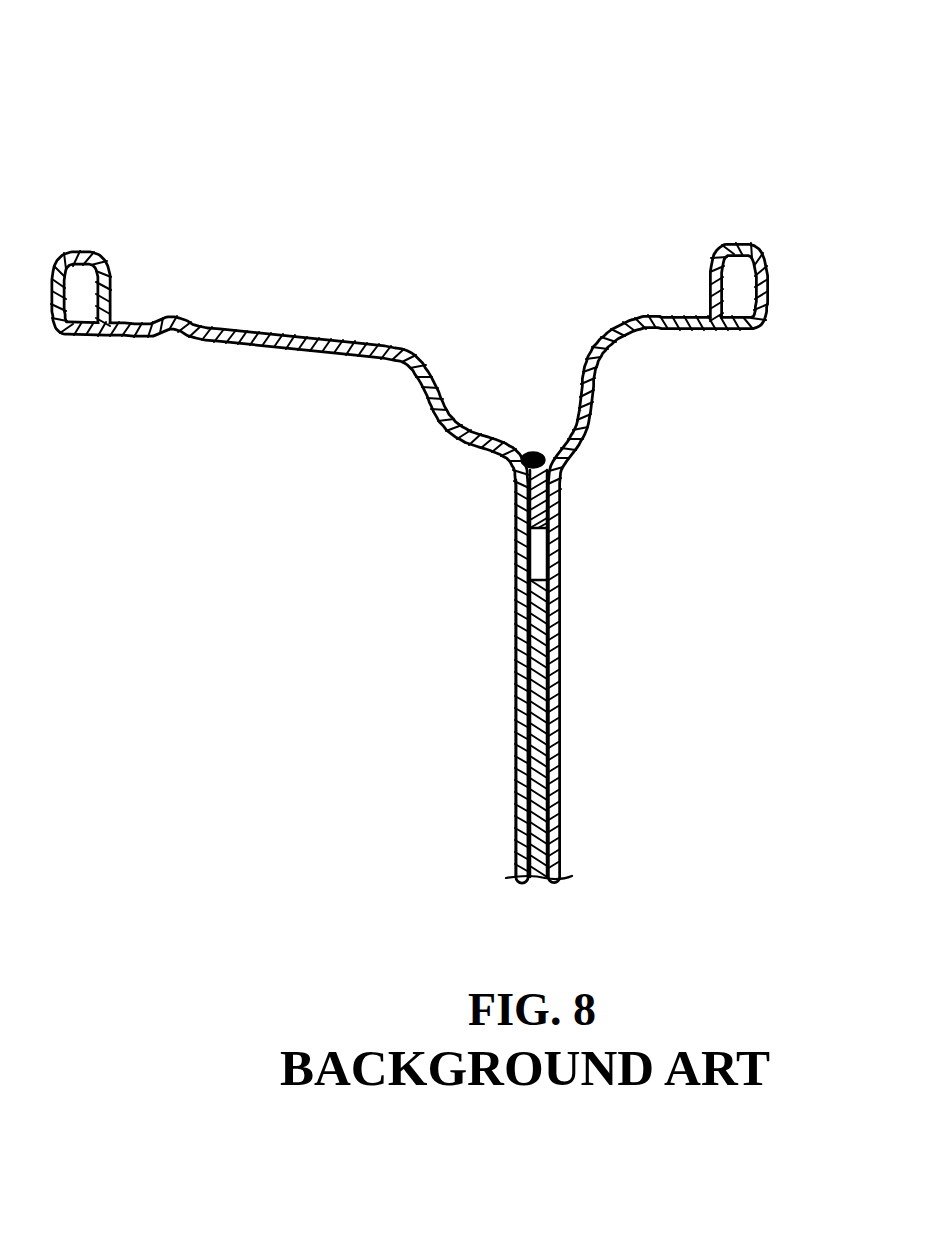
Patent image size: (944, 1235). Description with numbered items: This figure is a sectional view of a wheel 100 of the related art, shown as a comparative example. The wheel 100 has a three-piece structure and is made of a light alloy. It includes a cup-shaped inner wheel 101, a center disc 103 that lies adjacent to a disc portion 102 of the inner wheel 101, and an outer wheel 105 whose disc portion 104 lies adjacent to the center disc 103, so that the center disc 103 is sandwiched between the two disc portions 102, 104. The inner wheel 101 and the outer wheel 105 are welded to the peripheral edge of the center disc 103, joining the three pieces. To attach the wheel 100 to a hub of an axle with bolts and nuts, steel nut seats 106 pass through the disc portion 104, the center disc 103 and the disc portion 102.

The wheel 100 is at (195, 183).
The inner wheel 101 is at (328, 335).
The disc portion 102 is at (518, 722).
The center disc 103 is at (535, 452).
The disc portion 104 is at (560, 705).
The outer wheel 105 is at (645, 312).
The steel nut seat 106 is at (560, 513).